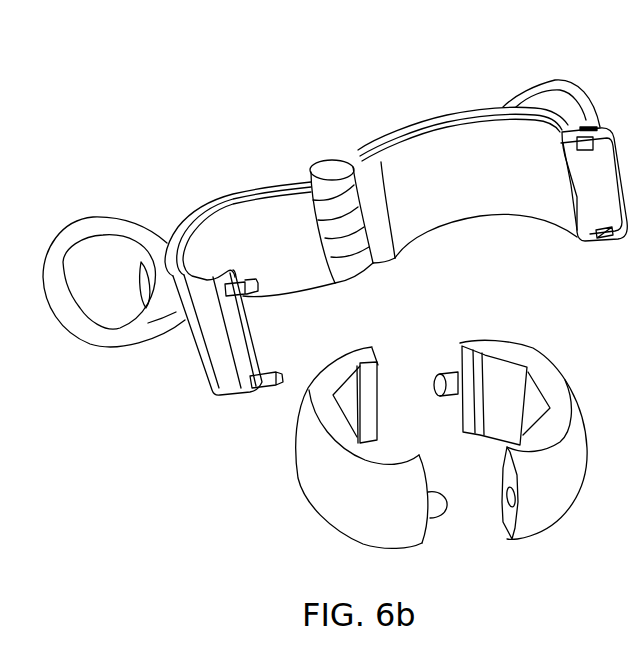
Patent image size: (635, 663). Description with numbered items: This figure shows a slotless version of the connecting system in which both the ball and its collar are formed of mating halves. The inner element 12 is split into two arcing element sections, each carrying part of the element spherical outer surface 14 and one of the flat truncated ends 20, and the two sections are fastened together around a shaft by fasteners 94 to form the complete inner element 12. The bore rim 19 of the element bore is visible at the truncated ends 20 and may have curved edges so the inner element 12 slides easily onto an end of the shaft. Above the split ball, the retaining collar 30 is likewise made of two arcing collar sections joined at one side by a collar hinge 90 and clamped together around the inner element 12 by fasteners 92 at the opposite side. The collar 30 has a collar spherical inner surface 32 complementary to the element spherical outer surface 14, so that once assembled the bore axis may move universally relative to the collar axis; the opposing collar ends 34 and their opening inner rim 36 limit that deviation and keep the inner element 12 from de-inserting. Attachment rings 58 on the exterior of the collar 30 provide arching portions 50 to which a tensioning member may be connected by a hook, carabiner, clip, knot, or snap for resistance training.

The inner element 12 is at (538, 568).
The element spherical outer surface 14 is at (313, 482).
The bore rim 19 is at (383, 445).
The truncated ends 20 is at (333, 373).
The retaining collar 30 is at (165, 124).
The collar spherical inner surface 32 is at (263, 213).
The collar ends 34 is at (207, 207).
The opening inner rim 36 is at (245, 193).
The arching portion 50 is at (60, 297).
The attachment ring 58 is at (110, 222).
The collar hinge 90 is at (328, 167).
The fasteners 92 is at (253, 297).
The fasteners 94 is at (442, 375).